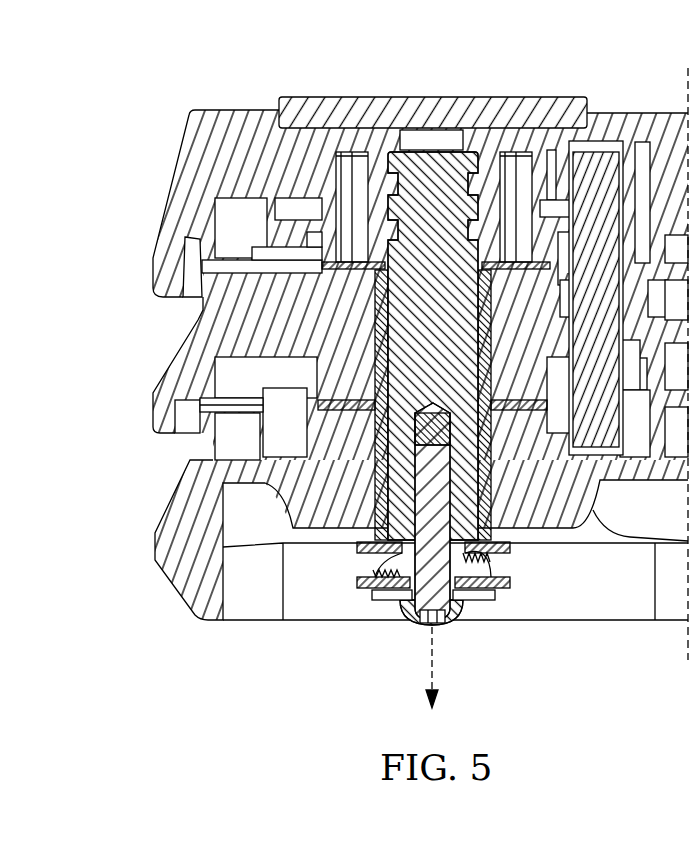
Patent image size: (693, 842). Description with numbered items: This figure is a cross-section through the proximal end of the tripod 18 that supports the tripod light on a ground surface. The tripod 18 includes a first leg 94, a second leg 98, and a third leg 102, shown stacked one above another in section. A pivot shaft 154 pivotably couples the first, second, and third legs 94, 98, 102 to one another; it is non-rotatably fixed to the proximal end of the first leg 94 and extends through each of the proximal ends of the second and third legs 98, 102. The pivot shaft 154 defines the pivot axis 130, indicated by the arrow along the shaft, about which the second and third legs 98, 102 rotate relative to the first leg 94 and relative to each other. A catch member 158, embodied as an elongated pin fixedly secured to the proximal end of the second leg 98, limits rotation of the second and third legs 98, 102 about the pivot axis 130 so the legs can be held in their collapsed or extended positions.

The tripod 18 is at (150, 452).
The first leg 94 is at (188, 173).
The second leg 98 is at (188, 353).
The third leg 102 is at (165, 553).
The pivot axis 130 is at (432, 663).
The pivot shaft 154 is at (428, 165).
The catch member 158 is at (592, 158).